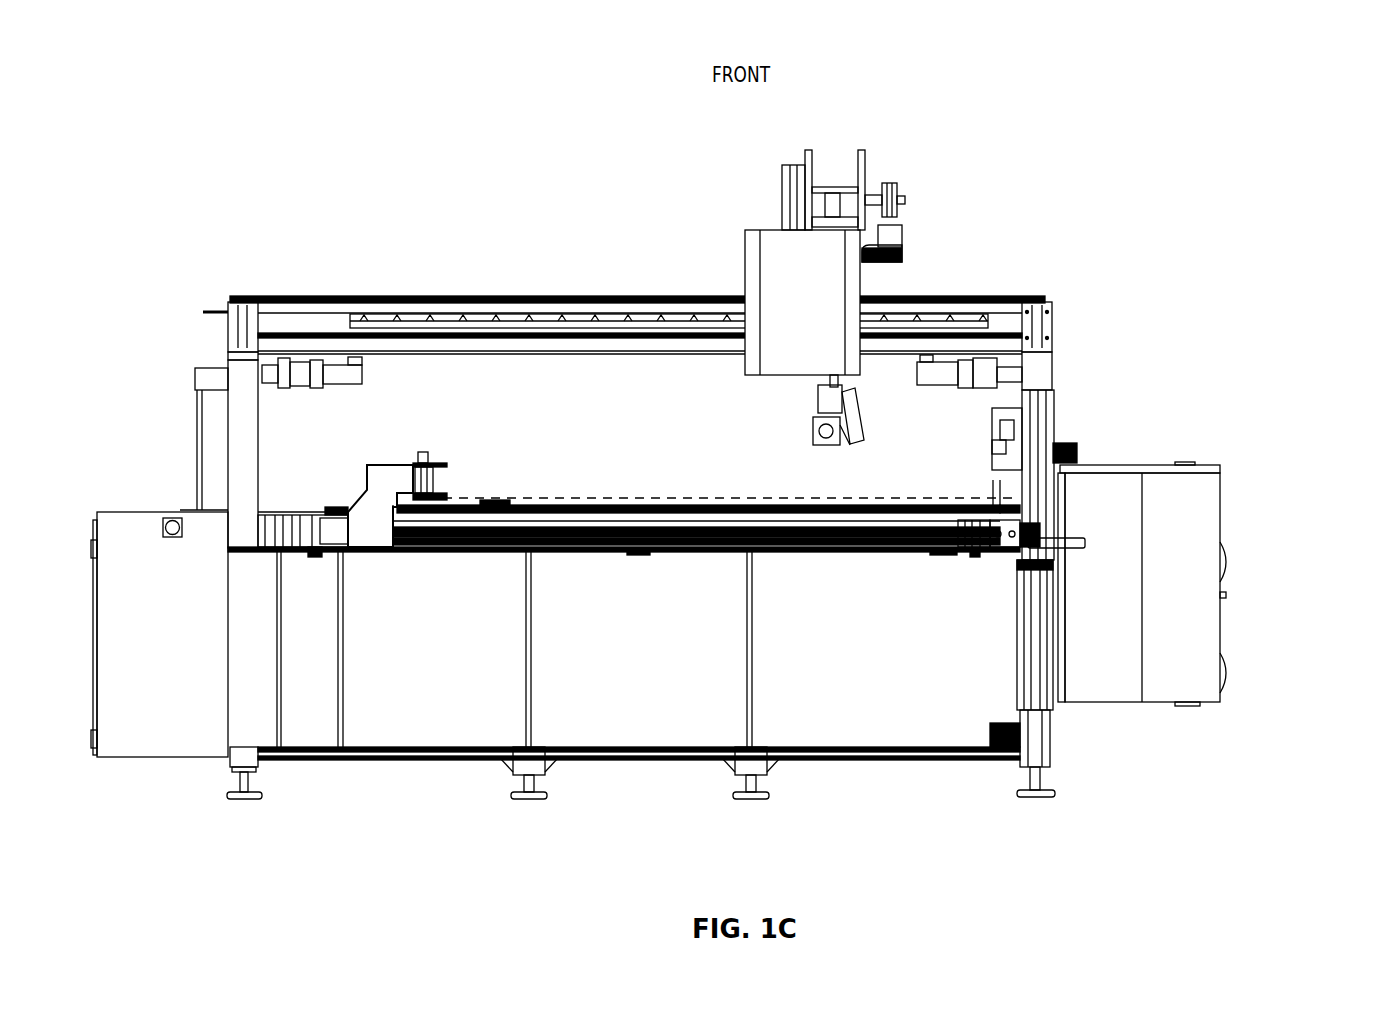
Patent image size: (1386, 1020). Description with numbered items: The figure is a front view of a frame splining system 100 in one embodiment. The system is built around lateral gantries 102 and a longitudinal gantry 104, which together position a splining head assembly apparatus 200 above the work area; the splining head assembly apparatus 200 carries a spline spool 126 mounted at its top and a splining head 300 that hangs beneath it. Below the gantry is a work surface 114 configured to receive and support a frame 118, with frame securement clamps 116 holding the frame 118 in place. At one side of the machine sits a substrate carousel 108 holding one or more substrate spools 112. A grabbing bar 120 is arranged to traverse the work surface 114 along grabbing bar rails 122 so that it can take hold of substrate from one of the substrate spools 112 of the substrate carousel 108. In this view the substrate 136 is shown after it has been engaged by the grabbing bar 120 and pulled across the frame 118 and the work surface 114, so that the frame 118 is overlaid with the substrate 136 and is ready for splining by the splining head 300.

The frame splining system 100 is at (1292, 68).
The lateral gantries 102 is at (233, 300).
The longitudinal gantry 104 is at (560, 298).
The substrate carousel 108 is at (1136, 574).
The substrate spools 112 is at (1228, 672).
The work surface 114 is at (608, 505).
The frame securement clamps 116 is at (512, 498).
The frame 118 is at (928, 500).
The grabbing bar 120 is at (443, 498).
The grabbing bar rails 122 is at (412, 549).
The spline spool 126 is at (866, 160).
The substrate 136 is at (653, 500).
The splining head assembly apparatus 200 is at (822, 318).
The splining head 300 is at (815, 430).